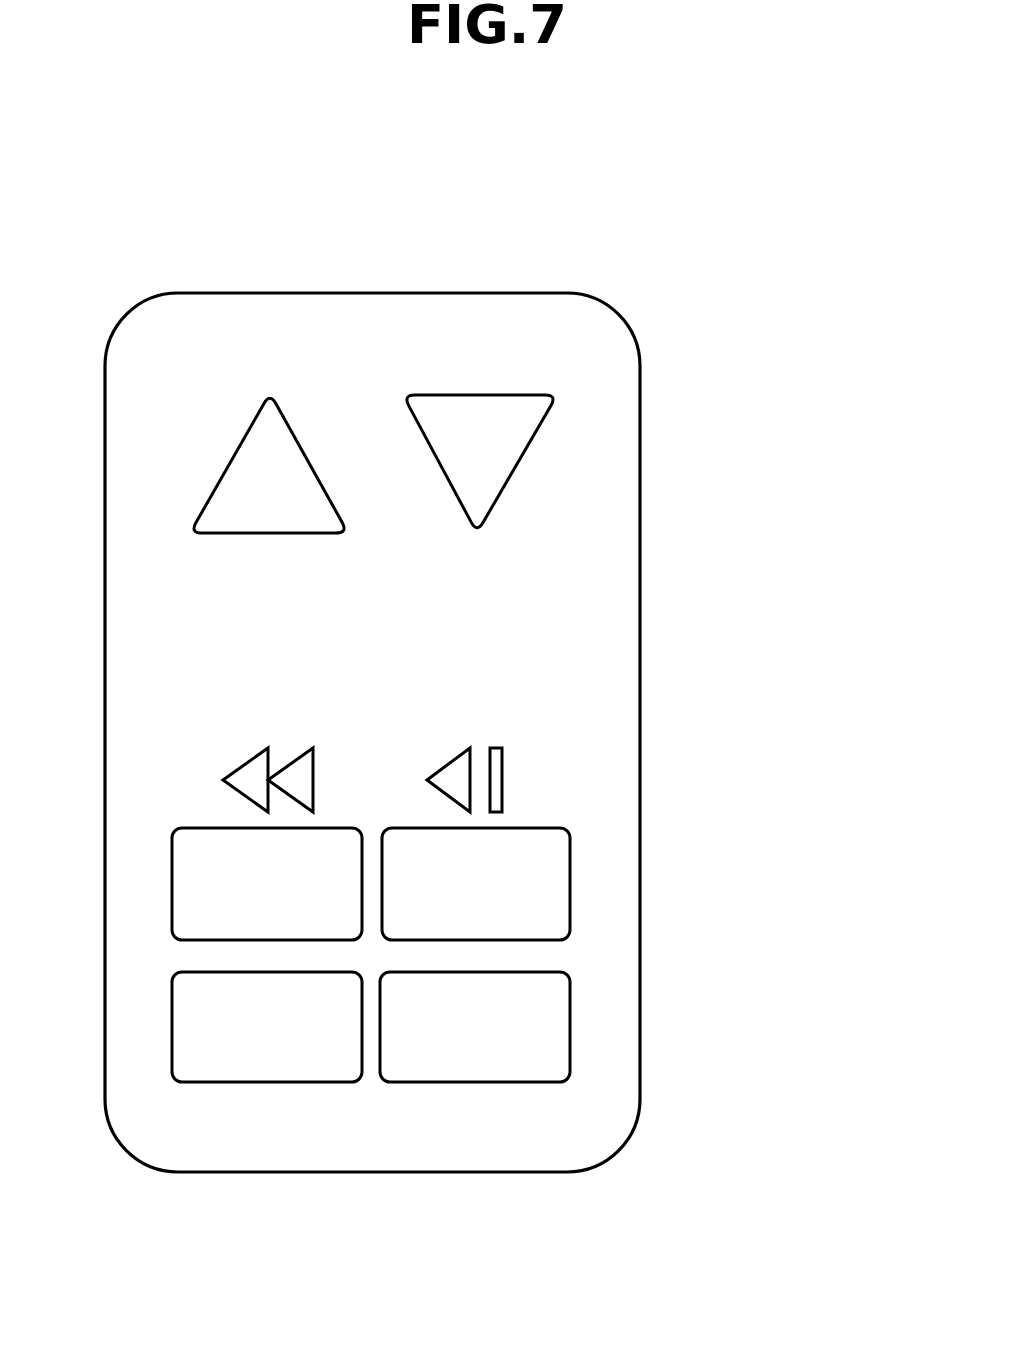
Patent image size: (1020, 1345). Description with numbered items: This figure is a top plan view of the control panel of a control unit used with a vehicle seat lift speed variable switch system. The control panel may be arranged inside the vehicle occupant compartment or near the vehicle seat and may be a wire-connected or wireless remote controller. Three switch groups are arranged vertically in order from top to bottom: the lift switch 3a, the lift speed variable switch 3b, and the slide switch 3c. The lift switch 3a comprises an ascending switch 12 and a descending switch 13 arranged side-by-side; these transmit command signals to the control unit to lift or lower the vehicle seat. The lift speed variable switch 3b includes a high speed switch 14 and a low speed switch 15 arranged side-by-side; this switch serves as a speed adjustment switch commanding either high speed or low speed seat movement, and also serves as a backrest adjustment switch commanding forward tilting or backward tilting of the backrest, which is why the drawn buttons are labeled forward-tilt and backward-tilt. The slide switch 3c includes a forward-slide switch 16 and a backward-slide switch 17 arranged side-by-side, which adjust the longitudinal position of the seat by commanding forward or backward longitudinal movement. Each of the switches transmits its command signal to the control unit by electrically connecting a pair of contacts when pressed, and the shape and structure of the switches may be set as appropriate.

The lift switch 3a is at (307, 203).
The ascending switch 12 is at (268, 390).
The descending switch 13 is at (478, 395).
The lift speed variable switch 3b is at (793, 713).
The high speed switch 14 is at (330, 828).
The low speed switch 15 is at (570, 883).
The slide switch 3c is at (300, 1260).
The forward-slide switch 16 is at (263, 1082).
The backward-slide switch 17 is at (477, 1082).